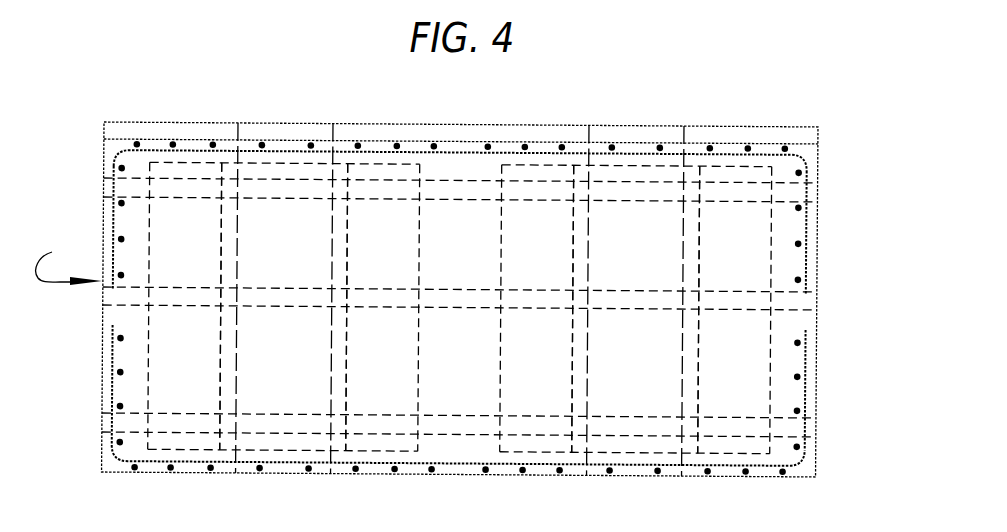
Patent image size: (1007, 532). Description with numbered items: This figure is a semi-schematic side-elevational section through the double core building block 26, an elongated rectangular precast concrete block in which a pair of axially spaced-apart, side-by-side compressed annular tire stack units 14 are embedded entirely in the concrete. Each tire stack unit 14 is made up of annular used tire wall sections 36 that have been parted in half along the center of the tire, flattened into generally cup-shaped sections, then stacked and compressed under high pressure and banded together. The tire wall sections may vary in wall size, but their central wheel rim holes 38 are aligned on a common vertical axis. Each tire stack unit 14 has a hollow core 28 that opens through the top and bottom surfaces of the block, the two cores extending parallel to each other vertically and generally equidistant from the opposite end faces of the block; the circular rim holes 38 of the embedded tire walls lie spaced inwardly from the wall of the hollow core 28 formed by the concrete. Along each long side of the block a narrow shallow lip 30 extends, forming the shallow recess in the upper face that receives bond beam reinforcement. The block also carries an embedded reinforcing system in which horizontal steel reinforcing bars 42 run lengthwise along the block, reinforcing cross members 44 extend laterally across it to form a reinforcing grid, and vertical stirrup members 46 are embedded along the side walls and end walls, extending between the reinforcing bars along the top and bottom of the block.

The tire stack unit 14 is at (420, 238).
The double core building block 26 is at (69, 265).
The hollow core 28 is at (238, 242).
The lip 30 is at (651, 124).
The tire wall section 36 is at (500, 268).
The wheel rim hole 38 is at (222, 353).
The horizontal steel reinforcing bar 42 is at (297, 152).
The reinforcing cross member 44 is at (436, 144).
The vertical stirrup member 46 is at (114, 348).